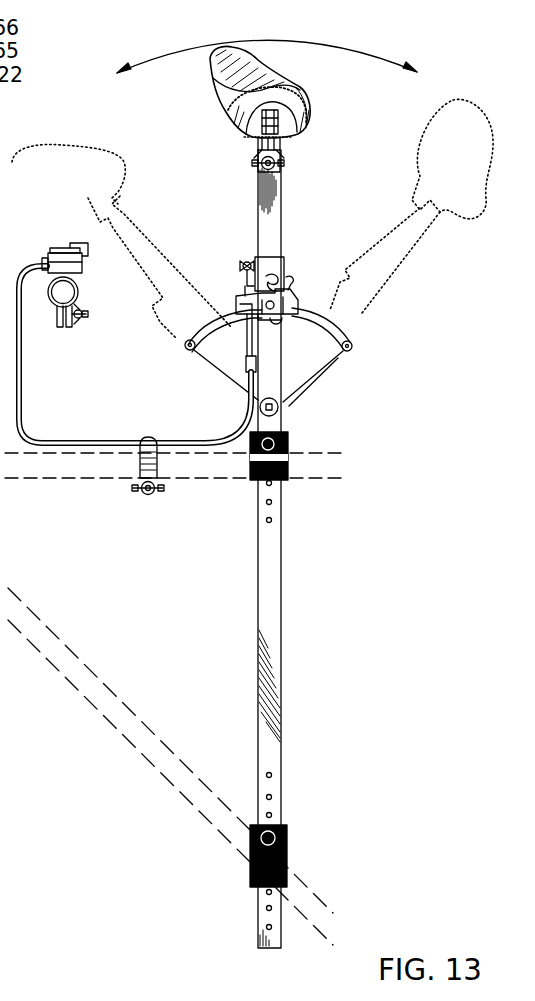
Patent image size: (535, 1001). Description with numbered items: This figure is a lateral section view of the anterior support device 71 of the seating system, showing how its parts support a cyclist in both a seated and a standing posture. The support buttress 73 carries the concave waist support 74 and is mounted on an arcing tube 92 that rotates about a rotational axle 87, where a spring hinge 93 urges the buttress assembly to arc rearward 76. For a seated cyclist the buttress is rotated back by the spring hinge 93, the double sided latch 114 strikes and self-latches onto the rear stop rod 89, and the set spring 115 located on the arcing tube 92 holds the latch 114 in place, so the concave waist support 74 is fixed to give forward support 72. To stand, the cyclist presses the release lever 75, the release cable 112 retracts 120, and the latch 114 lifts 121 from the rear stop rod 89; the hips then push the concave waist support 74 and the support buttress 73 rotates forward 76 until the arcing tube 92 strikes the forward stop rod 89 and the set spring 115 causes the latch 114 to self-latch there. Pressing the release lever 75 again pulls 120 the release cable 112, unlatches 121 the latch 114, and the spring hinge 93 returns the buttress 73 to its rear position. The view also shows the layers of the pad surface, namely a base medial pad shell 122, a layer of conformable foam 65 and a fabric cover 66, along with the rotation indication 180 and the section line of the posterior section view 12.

The posterior section view 12 is at (287, 72).
The conformable foam 65 is at (291, 120).
The fabric cover 66 is at (300, 86).
The anterior support device 71 is at (460, 876).
The forward support 72 is at (215, 177).
The support buttress 73 is at (350, 162).
The concave waist support 74 is at (286, 75).
The release lever 75 is at (84, 248).
The rotation of support buttress 76 is at (363, 47).
The rotational axle 87 is at (278, 415).
The stop rod 89 is at (200, 350).
The arcing tube 92 is at (280, 253).
The spring hinge 93 is at (283, 429).
The release cable 112 is at (180, 450).
The double sided latch 114 is at (296, 300).
The set spring 115 is at (279, 275).
The retraction of release cable 120 is at (243, 352).
The lifting of latch 121 is at (236, 292).
The medial pad shell 122 is at (286, 140).
The rotation direction 180 is at (212, 125).